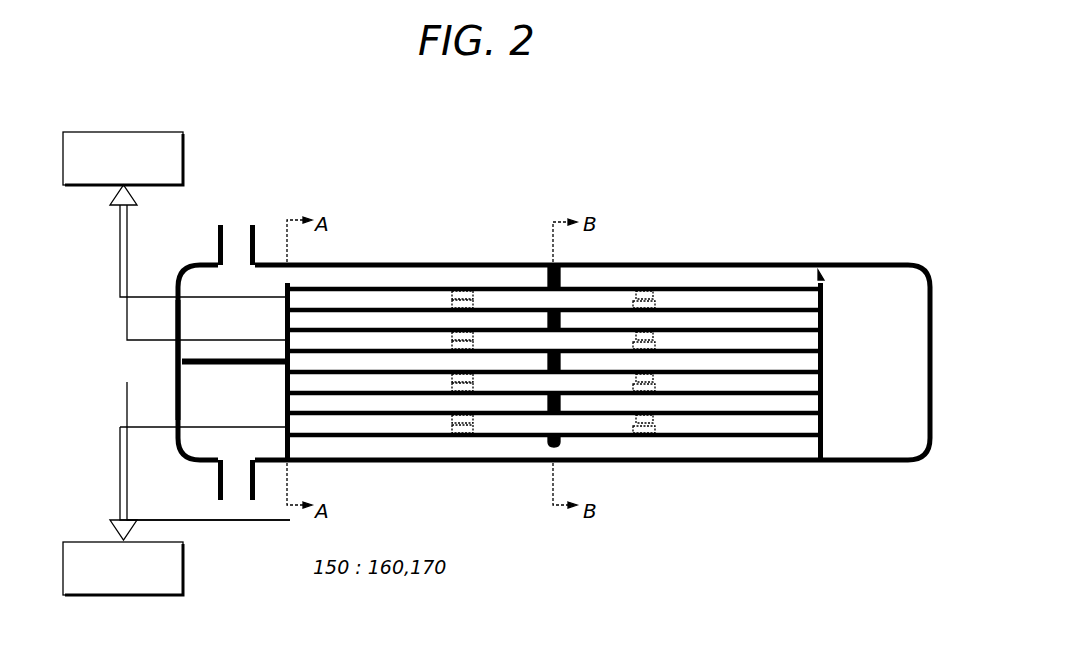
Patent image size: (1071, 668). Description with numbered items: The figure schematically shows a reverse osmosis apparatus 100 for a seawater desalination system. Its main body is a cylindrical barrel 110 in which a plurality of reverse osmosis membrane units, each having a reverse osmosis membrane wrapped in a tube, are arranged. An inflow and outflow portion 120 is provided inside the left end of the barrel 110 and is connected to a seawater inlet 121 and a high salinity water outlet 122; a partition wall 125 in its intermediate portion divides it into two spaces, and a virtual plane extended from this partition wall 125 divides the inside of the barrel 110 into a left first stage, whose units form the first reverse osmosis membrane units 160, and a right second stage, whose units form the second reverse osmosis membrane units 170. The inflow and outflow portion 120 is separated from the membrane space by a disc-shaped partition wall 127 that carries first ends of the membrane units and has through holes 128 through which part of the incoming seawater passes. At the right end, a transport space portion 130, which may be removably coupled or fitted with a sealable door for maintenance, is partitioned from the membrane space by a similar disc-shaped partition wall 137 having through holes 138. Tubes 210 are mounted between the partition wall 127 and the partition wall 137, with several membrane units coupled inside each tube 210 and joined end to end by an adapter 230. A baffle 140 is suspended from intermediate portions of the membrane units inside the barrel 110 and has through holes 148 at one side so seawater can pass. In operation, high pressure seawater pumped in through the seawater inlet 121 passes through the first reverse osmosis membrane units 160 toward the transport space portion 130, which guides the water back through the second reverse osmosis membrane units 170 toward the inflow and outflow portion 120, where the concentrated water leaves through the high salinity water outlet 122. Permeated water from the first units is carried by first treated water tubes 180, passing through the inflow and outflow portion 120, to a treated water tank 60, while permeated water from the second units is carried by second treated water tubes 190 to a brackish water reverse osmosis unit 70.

The treated water tank 60 is at (120, 132).
The brackish water reverse osmosis (BWRO) 70 is at (120, 595).
The reverse osmosis apparatus 100 is at (480, 210).
The barrel 110 is at (740, 262).
The inflow and outflow portion 120 is at (268, 262).
The seawater inlet 121 is at (218, 237).
The high salinity water outlet 122 is at (218, 482).
The partition wall 125 is at (205, 360).
The partition wall 127 is at (292, 445).
The through holes 128 is at (290, 278).
The transport space portion 130 is at (882, 262).
The partition wall 137 is at (805, 295).
The through holes 138 is at (822, 280).
The baffle 140 is at (548, 272).
The through holes 148 is at (552, 447).
The first reverse osmosis membrane units 160 is at (427, 300).
The second reverse osmosis membrane units 170 is at (730, 385).
The first treated water tubes 180 is at (118, 245).
The second treated water tubes 190 is at (118, 478).
The tubes 210 is at (630, 290).
The adapter 230 is at (642, 305).